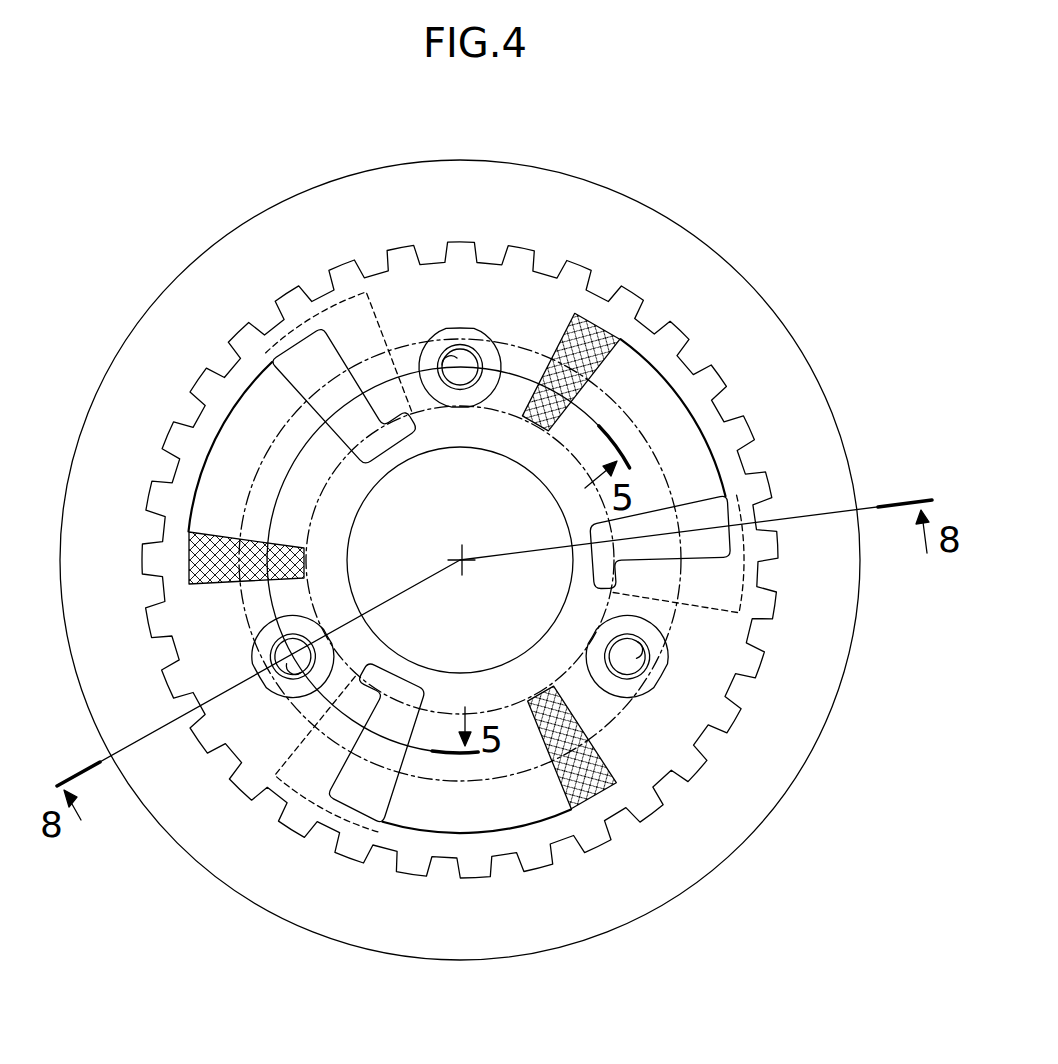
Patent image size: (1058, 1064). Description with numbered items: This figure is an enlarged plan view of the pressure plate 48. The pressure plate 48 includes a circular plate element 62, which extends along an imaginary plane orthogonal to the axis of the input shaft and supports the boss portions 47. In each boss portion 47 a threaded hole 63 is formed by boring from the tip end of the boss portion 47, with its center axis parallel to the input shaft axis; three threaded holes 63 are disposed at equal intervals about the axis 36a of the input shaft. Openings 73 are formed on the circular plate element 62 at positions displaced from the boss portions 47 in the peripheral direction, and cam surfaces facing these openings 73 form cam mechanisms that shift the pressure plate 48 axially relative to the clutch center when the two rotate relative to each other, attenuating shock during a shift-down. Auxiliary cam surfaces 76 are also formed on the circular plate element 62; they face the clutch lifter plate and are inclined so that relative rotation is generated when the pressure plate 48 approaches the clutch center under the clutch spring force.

The pressure plate 48 is at (752, 284).
The boss portion 47 is at (452, 332).
The threaded hole 63 is at (473, 357).
The opening 73 is at (301, 378).
The auxiliary cam surface 76 is at (597, 362).
The circular plate element 62 is at (348, 515).
The axis of the input shaft 36a is at (463, 558).